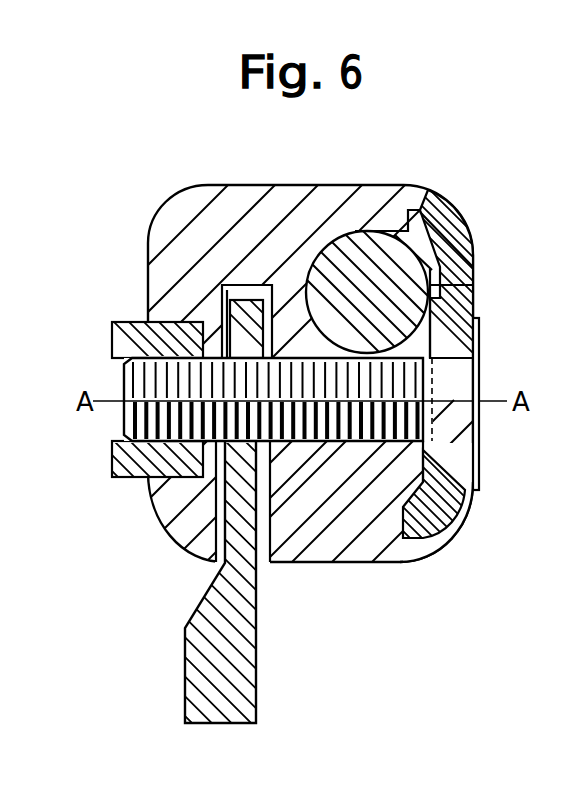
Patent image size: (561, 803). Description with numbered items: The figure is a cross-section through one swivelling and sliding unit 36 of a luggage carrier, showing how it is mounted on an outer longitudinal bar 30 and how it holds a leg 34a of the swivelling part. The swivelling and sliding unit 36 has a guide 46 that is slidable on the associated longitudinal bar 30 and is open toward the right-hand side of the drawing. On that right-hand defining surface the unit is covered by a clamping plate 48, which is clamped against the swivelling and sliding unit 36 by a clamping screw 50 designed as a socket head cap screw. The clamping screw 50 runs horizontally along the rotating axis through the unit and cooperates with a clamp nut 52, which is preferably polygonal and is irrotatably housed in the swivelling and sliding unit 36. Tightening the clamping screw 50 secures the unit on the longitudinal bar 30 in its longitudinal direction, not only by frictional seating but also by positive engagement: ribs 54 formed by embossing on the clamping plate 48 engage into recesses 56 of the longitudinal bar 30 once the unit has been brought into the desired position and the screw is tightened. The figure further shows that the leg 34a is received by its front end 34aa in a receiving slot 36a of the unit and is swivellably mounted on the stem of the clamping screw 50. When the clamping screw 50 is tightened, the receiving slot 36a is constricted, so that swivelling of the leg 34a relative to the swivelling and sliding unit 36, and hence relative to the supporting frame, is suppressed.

The outer longitudinal bar 30 is at (402, 272).
The leg of the swivelling part 34a is at (200, 674).
The front end of the leg 34aa is at (238, 317).
The swivelling and sliding unit 36 is at (217, 218).
The receiving slot 36a is at (260, 287).
The guide 46 is at (378, 231).
The clamping plate 48 is at (452, 270).
The clamping screw 50 is at (368, 428).
The clamp nut 52 is at (124, 472).
The ribs 54 is at (448, 286).
The recesses 56 is at (430, 307).